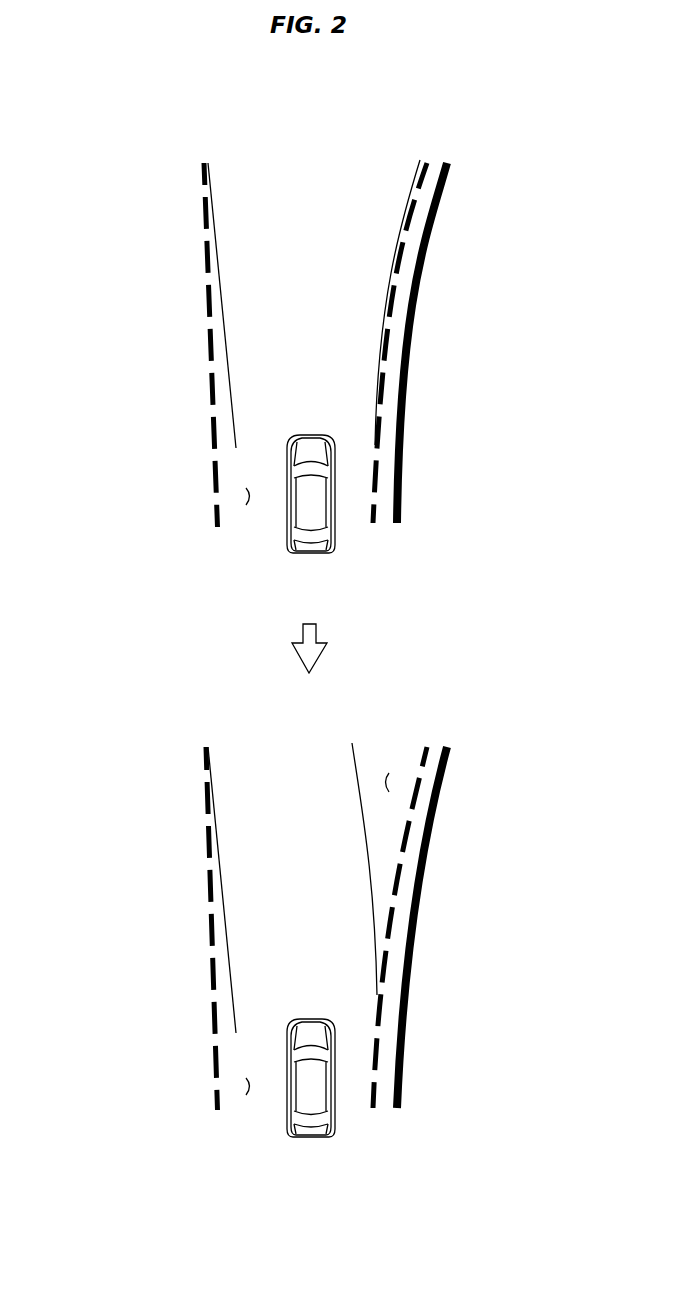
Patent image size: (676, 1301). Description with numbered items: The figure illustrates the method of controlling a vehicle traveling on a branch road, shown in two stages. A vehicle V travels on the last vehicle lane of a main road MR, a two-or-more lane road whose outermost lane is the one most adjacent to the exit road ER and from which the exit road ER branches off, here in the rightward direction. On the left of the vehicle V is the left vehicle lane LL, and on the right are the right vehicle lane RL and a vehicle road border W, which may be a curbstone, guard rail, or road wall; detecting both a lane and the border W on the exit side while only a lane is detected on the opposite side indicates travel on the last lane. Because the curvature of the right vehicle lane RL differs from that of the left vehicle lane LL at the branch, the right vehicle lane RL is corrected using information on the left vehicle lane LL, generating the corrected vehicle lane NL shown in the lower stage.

The left vehicle lane LL is at (216, 431).
The main road MR is at (247, 495).
The vehicle road border W is at (408, 328).
The right vehicle lane RL is at (375, 477).
The vehicle V is at (333, 527).
The corrected vehicle lane NL is at (362, 782).
The exit road ER is at (390, 780).